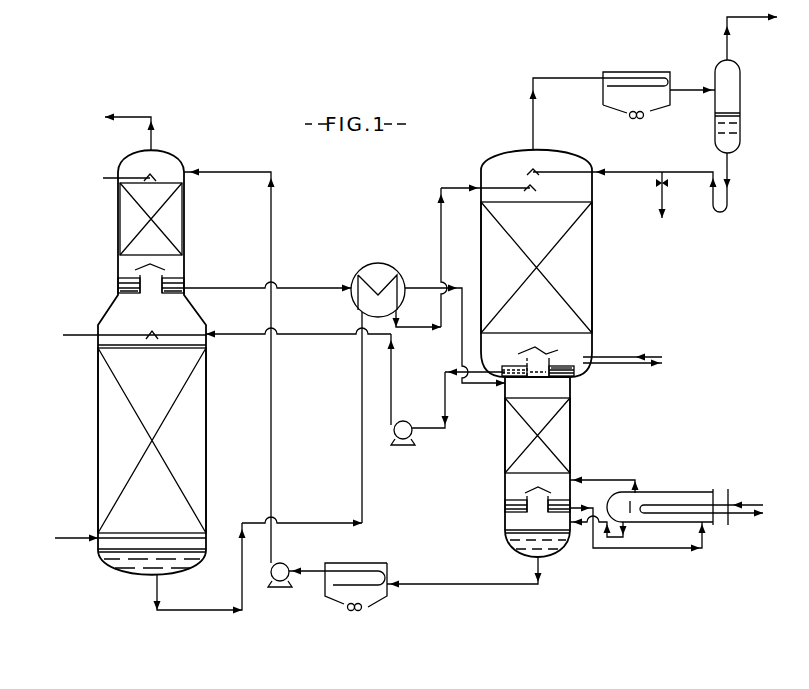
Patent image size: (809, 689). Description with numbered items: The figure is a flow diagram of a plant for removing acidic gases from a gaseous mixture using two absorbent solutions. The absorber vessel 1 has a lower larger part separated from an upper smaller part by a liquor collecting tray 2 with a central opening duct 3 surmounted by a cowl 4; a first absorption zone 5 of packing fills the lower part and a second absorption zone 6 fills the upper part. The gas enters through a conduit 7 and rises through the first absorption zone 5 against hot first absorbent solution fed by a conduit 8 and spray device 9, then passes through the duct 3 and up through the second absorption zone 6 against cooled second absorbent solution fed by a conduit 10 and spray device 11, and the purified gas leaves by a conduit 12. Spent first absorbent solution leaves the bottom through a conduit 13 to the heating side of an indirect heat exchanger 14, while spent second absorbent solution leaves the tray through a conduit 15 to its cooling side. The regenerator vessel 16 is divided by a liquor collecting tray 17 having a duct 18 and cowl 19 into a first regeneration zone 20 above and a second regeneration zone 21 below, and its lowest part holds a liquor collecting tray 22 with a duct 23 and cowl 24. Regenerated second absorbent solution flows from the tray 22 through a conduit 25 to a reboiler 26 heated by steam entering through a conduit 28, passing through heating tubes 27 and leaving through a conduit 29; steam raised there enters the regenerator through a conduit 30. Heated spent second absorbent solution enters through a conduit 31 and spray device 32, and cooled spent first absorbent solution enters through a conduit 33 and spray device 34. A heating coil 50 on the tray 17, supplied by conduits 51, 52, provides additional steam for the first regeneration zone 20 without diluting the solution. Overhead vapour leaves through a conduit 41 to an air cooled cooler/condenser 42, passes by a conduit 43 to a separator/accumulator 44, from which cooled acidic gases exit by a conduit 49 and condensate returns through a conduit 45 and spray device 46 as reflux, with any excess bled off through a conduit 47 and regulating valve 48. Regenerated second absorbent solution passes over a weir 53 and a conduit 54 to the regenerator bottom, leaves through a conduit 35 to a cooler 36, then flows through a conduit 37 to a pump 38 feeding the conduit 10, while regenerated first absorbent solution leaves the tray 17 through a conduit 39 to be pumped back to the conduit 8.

The absorber vessel 1 is at (207, 308).
The liquor collecting tray 2 is at (132, 296).
The central opening duct 3 is at (150, 279).
The cowl 4 is at (148, 268).
The first absorption zone 5 is at (193, 423).
The second absorption zone 6 is at (172, 222).
The conduit 7 is at (67, 541).
The conduit 8 is at (227, 333).
The spray device 9 is at (127, 335).
The conduit 10 is at (223, 172).
The spray device 11 is at (120, 177).
The conduit 12 is at (152, 136).
The conduit 13 is at (163, 595).
The indirect heat exchanger 14 is at (368, 271).
The conduit 15 is at (220, 285).
The regenerator vessel 16 is at (594, 351).
The liquor collecting tray 17 is at (573, 374).
The central opening duct 18 is at (583, 368).
The cowl 19 is at (552, 352).
The first regeneration zone 20 is at (572, 274).
The second regeneration zone 21 is at (558, 437).
The liquor collecting tray 22 is at (520, 513).
The central opening duct 23 is at (537, 505).
The cowl 24 is at (525, 490).
The conduit 25 is at (577, 508).
The reboiler 26 is at (648, 493).
The heating tubes 27 is at (673, 505).
The conduit 28 is at (747, 496).
The conduit 29 is at (747, 518).
The conduit 30 is at (625, 478).
The conduit 31 is at (418, 283).
The spray device 32 is at (538, 385).
The conduit 33 is at (403, 327).
The spray device 34 is at (530, 189).
The conduit 35 is at (543, 572).
The cooler 36 is at (355, 562).
The conduit 37 is at (289, 571).
The pump 38 is at (271, 573).
The conduit 39 is at (444, 390).
The conduit 41 is at (534, 120).
The air cooled cooler/condenser 42 is at (622, 72).
The conduit 43 is at (688, 89).
The separator/accumulator 44 is at (741, 94).
The conduit 45 is at (619, 170).
The spray device 46 is at (395, 434).
The conduit 47 is at (667, 213).
The regulating valve 48 is at (668, 183).
The conduit 49 is at (728, 47).
The heating coil 50 is at (518, 367).
The conduit 51 is at (650, 357).
The conduit 52 is at (650, 363).
The weir 53 is at (629, 512).
The conduit 54 is at (610, 538).